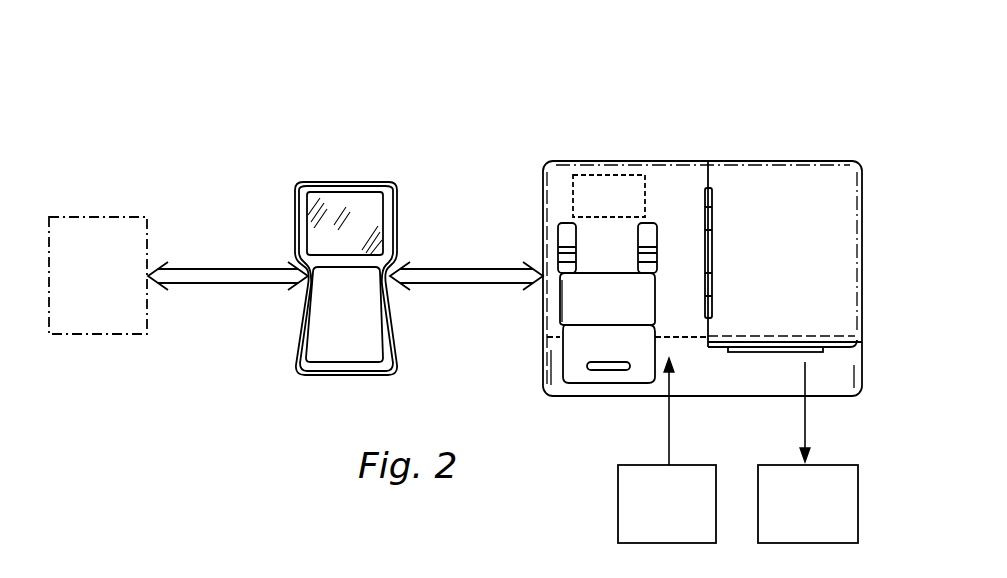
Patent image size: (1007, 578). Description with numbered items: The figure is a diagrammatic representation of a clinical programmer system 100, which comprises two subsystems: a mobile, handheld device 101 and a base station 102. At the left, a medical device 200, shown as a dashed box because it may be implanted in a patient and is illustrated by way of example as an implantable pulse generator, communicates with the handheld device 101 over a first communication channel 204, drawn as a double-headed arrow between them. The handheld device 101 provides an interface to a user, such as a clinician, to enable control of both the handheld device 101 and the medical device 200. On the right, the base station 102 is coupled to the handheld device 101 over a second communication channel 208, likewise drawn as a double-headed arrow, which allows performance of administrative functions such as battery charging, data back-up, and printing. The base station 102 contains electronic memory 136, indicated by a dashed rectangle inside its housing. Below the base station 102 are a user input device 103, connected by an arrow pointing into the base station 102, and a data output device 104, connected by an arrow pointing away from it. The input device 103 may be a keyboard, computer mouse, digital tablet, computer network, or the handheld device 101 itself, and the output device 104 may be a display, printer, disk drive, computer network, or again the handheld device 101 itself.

The system 100 is at (352, 119).
The handheld device 101 is at (346, 278).
The base station 102 is at (702, 278).
The user input device 103 is at (667, 450).
The data output device 104 is at (808, 452).
The electronic memory 136 is at (607, 172).
The medical device 200 is at (98, 275).
The first communication channel 204 is at (212, 267).
The second communication channel 208 is at (460, 268).